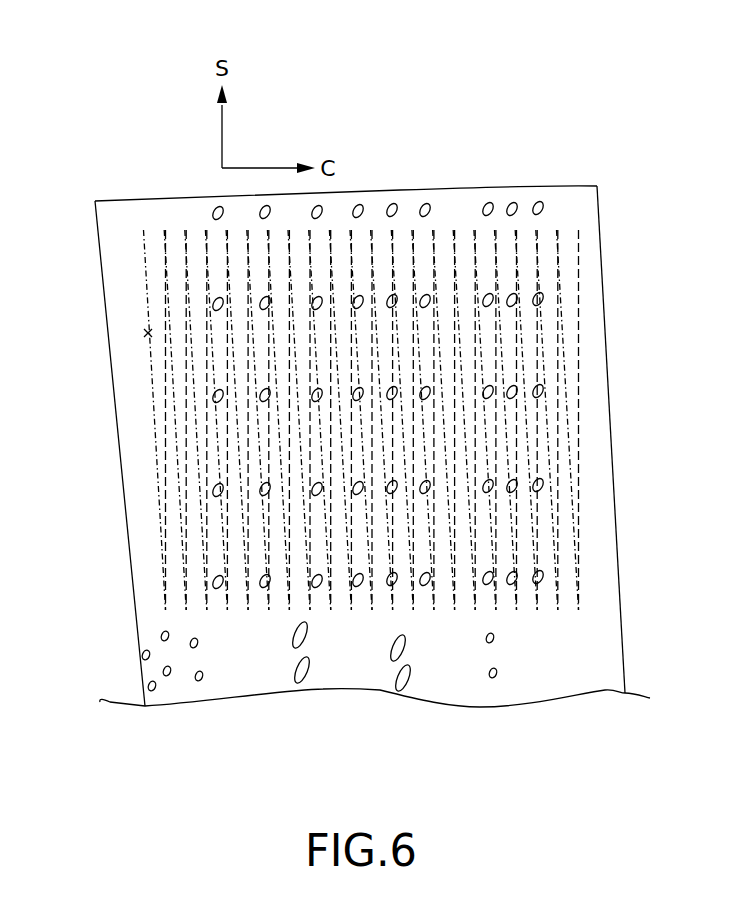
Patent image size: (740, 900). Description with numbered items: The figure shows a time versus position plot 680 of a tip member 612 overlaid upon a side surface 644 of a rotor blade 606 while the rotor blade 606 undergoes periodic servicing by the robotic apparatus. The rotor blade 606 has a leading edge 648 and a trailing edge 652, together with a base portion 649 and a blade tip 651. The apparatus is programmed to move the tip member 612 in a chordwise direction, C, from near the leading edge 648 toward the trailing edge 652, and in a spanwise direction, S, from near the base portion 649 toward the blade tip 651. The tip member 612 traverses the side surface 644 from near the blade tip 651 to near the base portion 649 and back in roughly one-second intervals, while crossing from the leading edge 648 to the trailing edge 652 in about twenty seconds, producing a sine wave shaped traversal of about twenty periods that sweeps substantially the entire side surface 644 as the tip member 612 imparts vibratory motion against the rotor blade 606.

The rotor blade 606 is at (361, 393).
The blade tip 651 is at (373, 193).
The trailing edge 652 is at (607, 382).
The leading edge 648 is at (118, 423).
The base portion 649 is at (460, 707).
The side surface 644 is at (573, 640).
The time versus position plot 680 is at (143, 245).
The tip member 612 is at (148, 333).